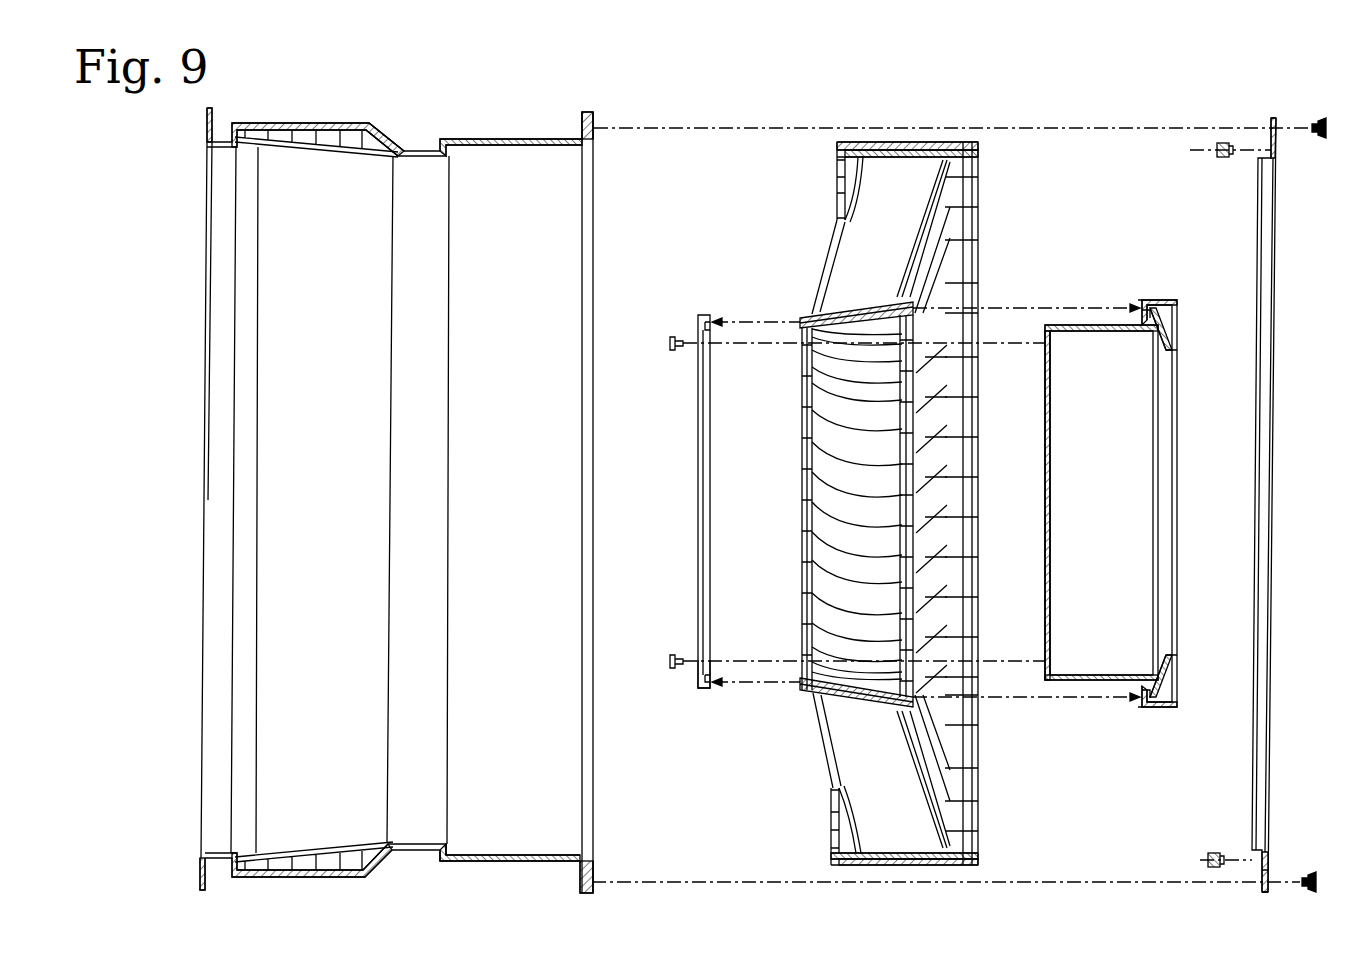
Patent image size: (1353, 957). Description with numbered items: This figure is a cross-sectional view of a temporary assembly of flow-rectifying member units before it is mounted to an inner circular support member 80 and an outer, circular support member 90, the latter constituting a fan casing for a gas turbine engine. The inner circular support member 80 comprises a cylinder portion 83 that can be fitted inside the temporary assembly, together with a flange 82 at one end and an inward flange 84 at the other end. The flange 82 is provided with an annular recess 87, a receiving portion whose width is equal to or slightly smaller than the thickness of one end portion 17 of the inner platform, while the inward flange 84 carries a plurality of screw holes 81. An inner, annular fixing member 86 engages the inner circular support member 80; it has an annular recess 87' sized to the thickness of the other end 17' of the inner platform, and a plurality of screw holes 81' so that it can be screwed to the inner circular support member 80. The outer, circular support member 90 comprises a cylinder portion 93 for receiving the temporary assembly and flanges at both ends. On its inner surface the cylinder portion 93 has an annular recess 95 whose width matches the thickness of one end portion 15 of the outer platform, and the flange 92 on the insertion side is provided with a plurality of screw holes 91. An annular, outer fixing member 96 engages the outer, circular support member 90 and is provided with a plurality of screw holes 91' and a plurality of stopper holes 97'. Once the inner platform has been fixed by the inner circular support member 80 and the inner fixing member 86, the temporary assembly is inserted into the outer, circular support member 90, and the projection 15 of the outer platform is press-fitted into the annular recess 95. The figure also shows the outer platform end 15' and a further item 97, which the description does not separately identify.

The outer circular support member 90 is at (193, 340).
The cylinder portion 93 is at (415, 150).
The flange 92 is at (582, 112).
The screw holes 91 is at (551, 879).
The annular recess 95 is at (447, 855).
The inner circular support member 80 is at (1088, 301).
The end portion of outer platform 15 is at (883, 779).
The shroud outer ring 15' is at (986, 503).
The end portion of inner platform 17 is at (961, 504).
The end of inner platform 17' is at (835, 533).
The inner annular fixing member 86 is at (692, 490).
The annular recess 87' is at (857, 501).
The screw holes 81' is at (738, 650).
The inward flange 84 is at (1047, 332).
The screw holes 81 is at (1084, 505).
The cylinder portion 83 is at (1082, 692).
The flange 82 is at (1176, 704).
The annular recess 87 is at (1126, 533).
The annular outer fixing member 96 is at (1288, 321).
The nut 97 is at (1226, 833).
The stopper holes 97' is at (1265, 499).
The screw holes 91' is at (1307, 862).